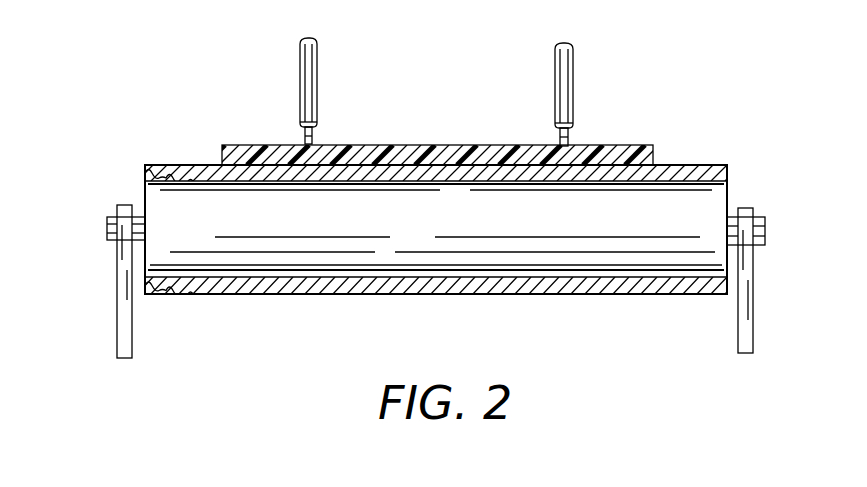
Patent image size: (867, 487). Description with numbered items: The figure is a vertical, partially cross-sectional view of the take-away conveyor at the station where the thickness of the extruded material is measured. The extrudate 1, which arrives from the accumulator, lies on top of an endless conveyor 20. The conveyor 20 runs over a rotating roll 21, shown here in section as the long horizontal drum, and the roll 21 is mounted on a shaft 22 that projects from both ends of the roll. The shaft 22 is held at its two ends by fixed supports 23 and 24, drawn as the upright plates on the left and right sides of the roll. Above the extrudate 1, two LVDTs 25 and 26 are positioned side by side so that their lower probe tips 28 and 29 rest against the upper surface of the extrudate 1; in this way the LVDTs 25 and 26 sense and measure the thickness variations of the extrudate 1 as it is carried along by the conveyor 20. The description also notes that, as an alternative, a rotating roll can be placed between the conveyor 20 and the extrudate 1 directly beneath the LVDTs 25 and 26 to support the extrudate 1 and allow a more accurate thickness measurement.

The extrudate 1 is at (225, 145).
The endless conveyor 20 is at (162, 178).
The rotating roll 21 is at (357, 248).
The shaft 22 is at (108, 229).
The fixed support 23 is at (121, 314).
The fixed support 24 is at (748, 301).
The LVDT 25 is at (318, 48).
The LVDT 26 is at (571, 72).
The first probe tip 28 is at (314, 144).
The second probe tip 29 is at (567, 146).